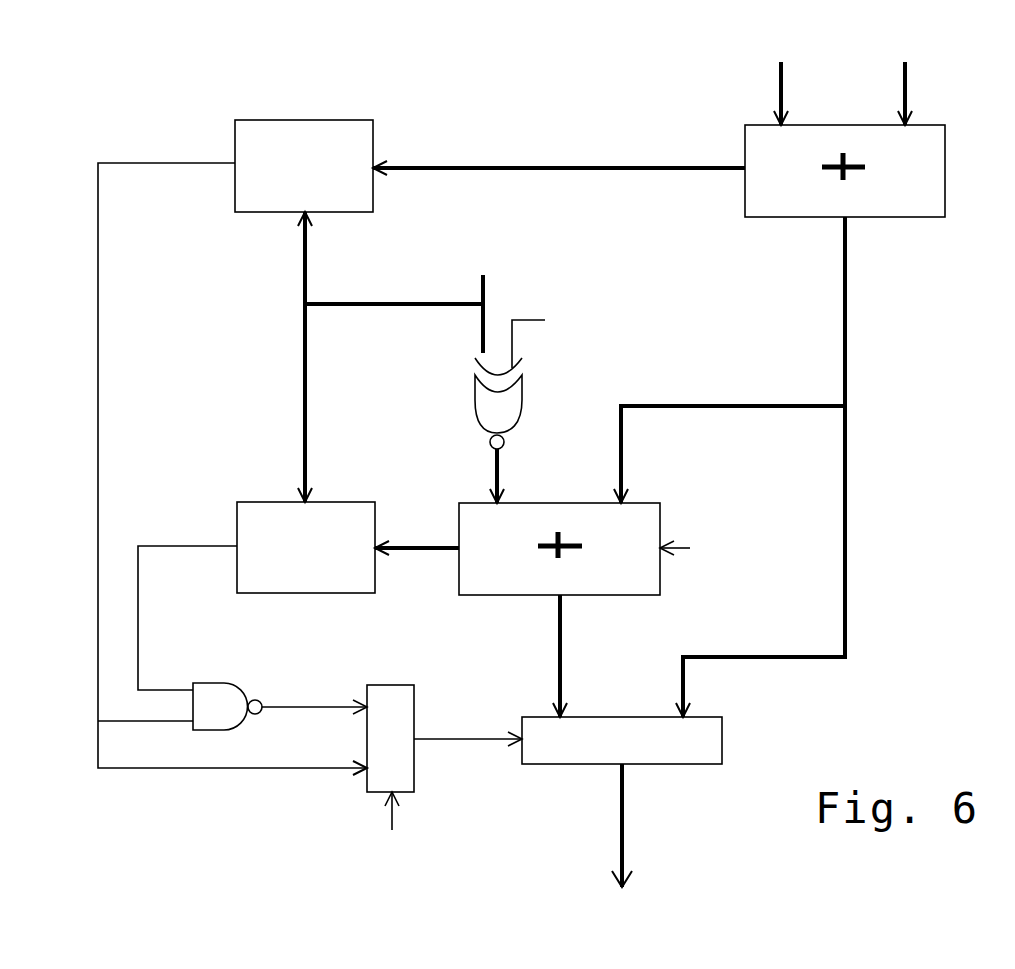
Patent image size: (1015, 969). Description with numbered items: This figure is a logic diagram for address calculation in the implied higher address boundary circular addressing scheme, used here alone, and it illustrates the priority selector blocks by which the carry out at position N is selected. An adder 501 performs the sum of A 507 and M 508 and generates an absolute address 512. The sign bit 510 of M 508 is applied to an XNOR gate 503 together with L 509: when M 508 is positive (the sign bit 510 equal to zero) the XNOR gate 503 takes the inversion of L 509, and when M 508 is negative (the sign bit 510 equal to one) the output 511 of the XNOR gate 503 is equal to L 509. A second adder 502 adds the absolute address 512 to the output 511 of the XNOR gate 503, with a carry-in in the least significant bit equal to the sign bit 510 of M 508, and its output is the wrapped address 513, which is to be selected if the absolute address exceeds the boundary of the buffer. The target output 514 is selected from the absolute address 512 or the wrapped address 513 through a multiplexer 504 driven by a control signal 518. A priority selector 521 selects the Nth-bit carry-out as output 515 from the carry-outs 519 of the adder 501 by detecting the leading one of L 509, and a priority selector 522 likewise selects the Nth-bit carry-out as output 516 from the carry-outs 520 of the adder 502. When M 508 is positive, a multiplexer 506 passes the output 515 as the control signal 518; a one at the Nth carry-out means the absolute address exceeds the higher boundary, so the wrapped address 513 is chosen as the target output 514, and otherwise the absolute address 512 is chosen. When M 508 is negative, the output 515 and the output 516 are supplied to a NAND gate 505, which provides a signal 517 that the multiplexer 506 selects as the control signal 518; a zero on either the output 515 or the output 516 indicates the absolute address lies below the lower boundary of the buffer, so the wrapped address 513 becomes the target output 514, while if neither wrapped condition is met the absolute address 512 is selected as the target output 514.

The adder 501 is at (877, 195).
The adder 502 is at (559, 520).
The XNOR gate 503 is at (468, 403).
The multiplexer 504 is at (622, 712).
The NAND gate 505 is at (217, 678).
The multiplexer 506 is at (383, 709).
The A 507 is at (747, 76).
The M 508 is at (871, 74).
The L 509 is at (391, 357).
The sign bit 510 is at (546, 581).
The output 511 is at (463, 471).
The absolute address 512 is at (729, 467).
The wrapped address 513 is at (530, 656).
The target output 514 is at (601, 825).
The output 515 is at (198, 469).
The output 516 is at (187, 588).
The signal 517 is at (314, 681).
The control signal 518 is at (468, 713).
The carry-outs 519 is at (559, 143).
The carry-outs 520 is at (417, 522).
The priority selector 521 is at (304, 137).
The priority selector 522 is at (300, 517).